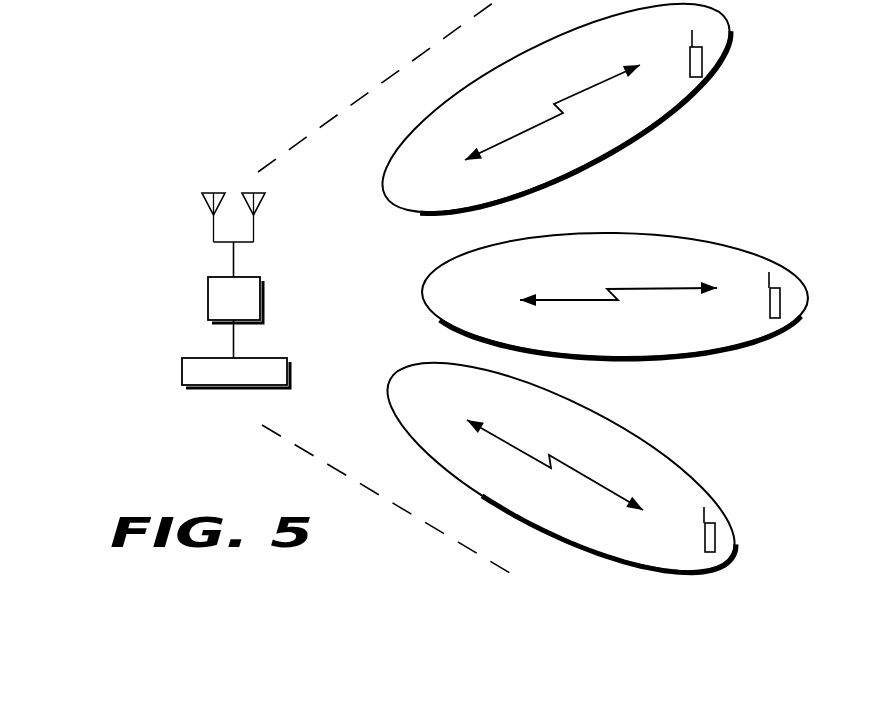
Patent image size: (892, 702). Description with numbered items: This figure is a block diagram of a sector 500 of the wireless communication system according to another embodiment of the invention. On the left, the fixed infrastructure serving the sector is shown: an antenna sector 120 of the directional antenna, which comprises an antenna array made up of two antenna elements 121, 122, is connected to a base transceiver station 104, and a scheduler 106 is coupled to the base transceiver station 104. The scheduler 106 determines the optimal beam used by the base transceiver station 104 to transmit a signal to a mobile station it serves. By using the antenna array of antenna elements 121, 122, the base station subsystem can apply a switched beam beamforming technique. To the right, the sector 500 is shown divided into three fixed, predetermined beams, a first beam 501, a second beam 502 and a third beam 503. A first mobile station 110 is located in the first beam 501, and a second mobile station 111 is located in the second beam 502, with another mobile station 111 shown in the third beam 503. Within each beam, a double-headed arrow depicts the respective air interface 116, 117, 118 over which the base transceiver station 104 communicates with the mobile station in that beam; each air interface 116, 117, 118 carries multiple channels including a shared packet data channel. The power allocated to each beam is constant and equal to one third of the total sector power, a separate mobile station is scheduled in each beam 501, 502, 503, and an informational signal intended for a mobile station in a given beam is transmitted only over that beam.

The sector 500 is at (763, 181).
The antenna sector 120 is at (178, 174).
The antenna element 121 is at (253, 229).
The antenna element 122 is at (212, 229).
The base transceiver station 104 is at (208, 297).
The scheduler 106 is at (182, 370).
The first beam 501 is at (530, 54).
The second beam 502 is at (633, 233).
The third beam 503 is at (583, 408).
The mobile station 110 is at (690, 52).
The mobile station 111 is at (770, 295).
The air interface 116 is at (537, 117).
The air interface 117 is at (632, 288).
The air interface 118 is at (547, 462).